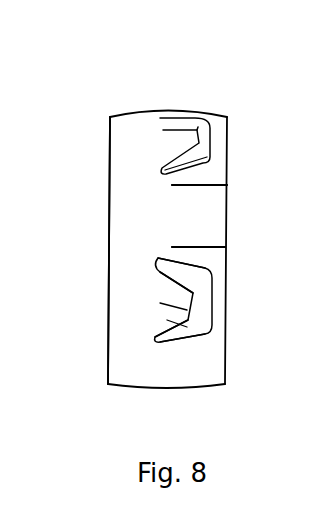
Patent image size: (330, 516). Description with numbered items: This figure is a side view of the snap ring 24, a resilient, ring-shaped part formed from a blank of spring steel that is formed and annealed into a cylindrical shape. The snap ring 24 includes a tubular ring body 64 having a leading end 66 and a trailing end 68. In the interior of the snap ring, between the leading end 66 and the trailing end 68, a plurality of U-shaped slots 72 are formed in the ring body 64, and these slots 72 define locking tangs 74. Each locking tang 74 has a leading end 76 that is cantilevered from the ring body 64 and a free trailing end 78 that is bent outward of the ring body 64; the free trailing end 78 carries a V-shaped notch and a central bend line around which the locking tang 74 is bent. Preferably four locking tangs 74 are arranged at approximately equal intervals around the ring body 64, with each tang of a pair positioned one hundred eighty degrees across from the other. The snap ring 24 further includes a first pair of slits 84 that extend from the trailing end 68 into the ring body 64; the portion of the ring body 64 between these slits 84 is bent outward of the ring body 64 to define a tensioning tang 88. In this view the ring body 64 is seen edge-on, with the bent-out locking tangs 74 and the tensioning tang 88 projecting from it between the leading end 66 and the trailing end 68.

The snap ring 24 is at (106, 90).
The tubular ring body 64 is at (132, 138).
The leading end 66 is at (109, 215).
The trailing end 68 is at (227, 363).
The U-shaped slots 72 is at (207, 142).
The locking tangs 74 is at (178, 322).
The leading end 76 is at (152, 288).
The free trailing end 78 is at (197, 300).
The first pair of slits 84 is at (205, 185).
The tensioning tang 88 is at (207, 225).